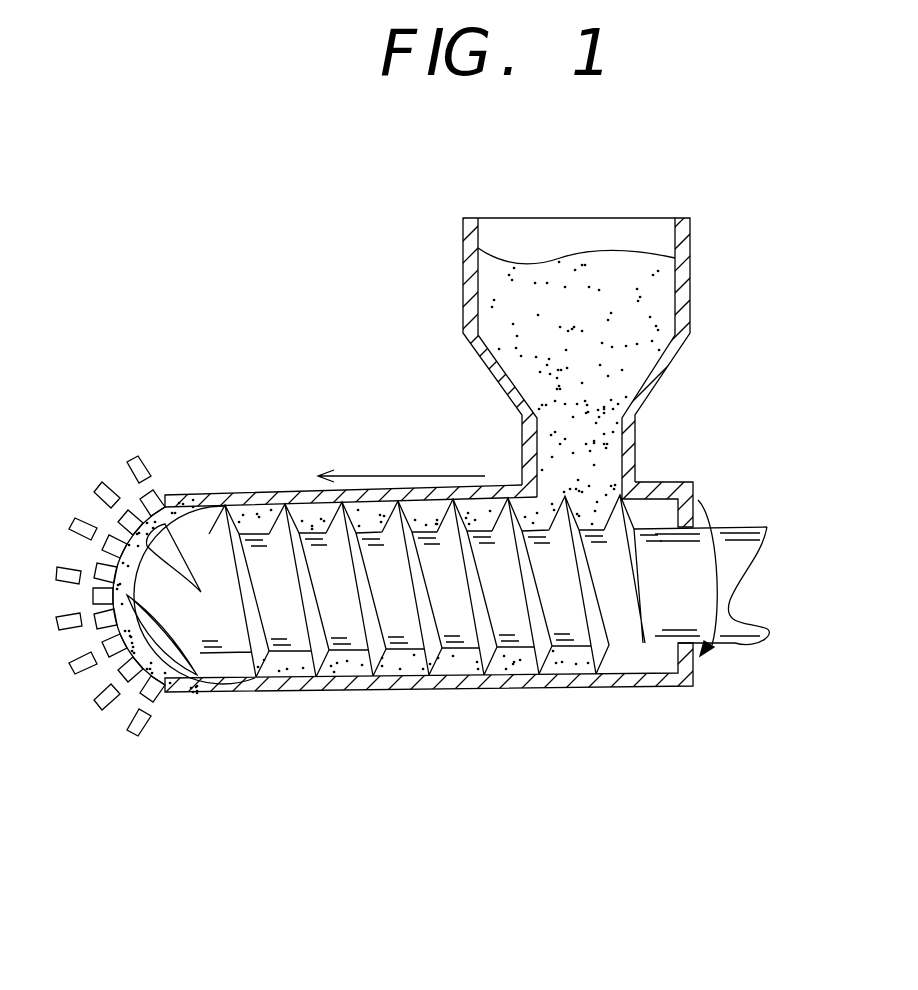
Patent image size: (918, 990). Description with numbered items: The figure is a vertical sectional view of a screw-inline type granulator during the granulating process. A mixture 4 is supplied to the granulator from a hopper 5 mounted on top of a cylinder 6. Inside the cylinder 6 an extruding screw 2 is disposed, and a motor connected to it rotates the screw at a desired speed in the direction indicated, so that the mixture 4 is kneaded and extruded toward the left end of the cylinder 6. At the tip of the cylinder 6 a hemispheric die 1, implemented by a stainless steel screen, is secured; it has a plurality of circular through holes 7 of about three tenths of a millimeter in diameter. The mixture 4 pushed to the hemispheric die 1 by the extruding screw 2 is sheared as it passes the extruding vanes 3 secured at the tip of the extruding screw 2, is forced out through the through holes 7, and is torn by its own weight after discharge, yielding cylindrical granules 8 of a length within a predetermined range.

The hemispheric die 1 is at (186, 495).
The extruding screw 2 is at (445, 603).
The extruding vanes 3 is at (173, 695).
The mixture 4 is at (600, 382).
The hopper 5 is at (587, 226).
The cylinder 6 is at (353, 693).
The through holes 7 is at (162, 500).
The cylindrical granules 8 is at (107, 694).